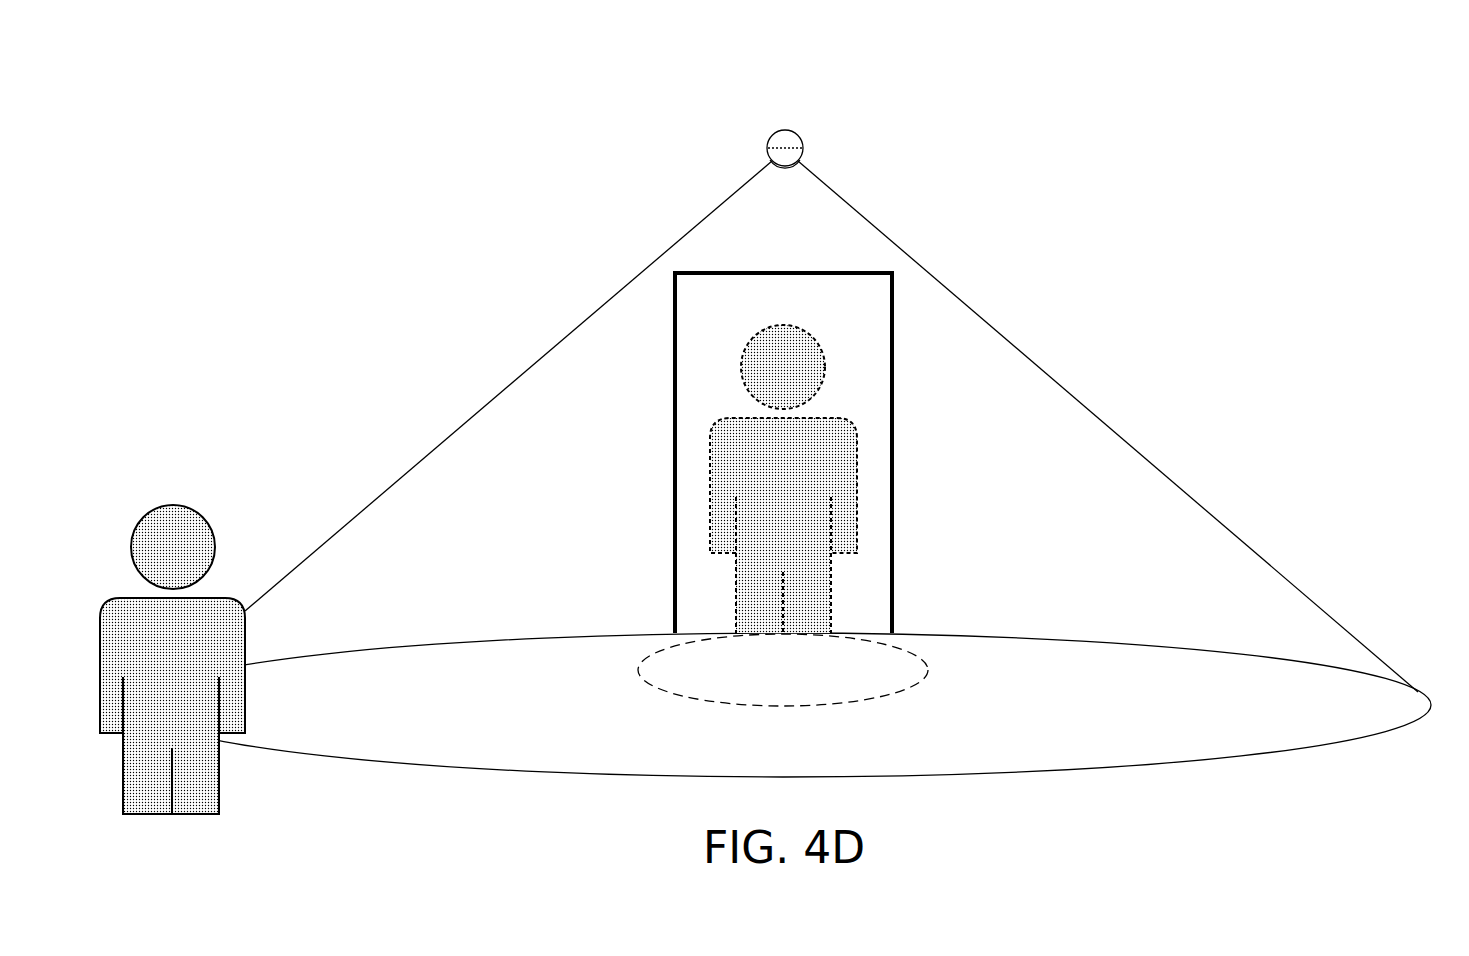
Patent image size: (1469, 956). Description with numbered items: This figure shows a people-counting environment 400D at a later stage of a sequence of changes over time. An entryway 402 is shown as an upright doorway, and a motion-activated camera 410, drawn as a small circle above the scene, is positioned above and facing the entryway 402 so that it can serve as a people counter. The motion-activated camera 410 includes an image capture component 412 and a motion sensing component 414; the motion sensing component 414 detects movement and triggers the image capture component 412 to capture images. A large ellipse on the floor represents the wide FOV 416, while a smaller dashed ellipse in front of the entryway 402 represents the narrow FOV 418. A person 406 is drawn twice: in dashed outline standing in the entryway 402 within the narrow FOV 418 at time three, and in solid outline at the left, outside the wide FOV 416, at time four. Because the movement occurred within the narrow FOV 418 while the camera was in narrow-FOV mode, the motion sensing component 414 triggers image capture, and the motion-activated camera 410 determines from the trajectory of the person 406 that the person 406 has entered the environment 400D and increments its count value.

The people-counting environment 400D is at (1345, 96).
The entryway 402 is at (785, 273).
The person 406 is at (196, 508).
The motion-activated camera 410 is at (783, 120).
The image capture component 412 is at (792, 140).
The motion sensing component 414 is at (783, 158).
The wide FOV 416 is at (425, 766).
The narrow FOV 418 is at (784, 706).